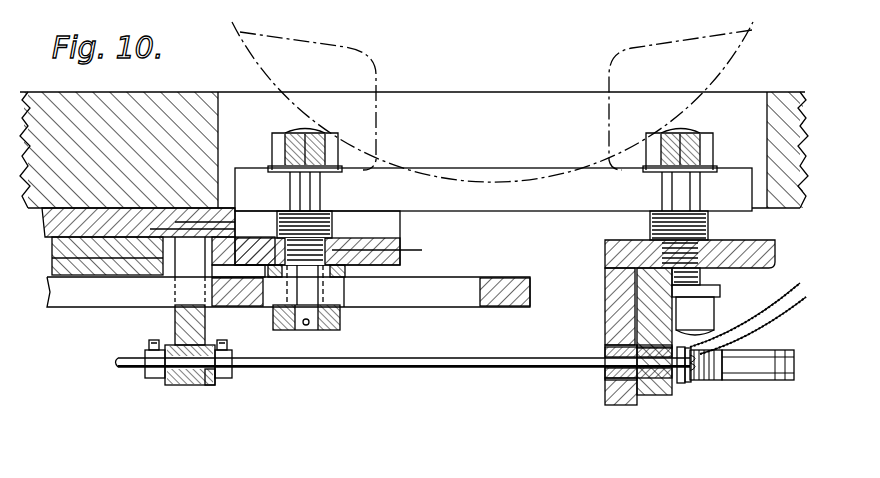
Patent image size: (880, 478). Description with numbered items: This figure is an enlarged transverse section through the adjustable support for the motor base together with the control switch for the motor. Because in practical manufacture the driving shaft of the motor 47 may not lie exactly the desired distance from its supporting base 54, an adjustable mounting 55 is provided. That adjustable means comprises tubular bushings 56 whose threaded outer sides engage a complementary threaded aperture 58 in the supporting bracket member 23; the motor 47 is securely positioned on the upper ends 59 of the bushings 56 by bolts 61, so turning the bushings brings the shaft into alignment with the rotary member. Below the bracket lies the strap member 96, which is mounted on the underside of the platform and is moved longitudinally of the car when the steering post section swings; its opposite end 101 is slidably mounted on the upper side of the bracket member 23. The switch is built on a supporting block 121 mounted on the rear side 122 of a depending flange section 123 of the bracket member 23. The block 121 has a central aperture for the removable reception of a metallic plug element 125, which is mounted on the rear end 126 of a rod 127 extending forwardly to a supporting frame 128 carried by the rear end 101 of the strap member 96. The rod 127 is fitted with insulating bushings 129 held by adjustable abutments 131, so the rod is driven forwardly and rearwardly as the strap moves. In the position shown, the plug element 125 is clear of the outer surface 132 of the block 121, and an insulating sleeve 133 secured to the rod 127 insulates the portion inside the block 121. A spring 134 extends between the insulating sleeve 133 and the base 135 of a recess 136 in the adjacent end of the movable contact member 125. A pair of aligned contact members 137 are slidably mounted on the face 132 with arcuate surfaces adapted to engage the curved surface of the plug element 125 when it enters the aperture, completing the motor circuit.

The motor 47 is at (377, 77).
The supporting base 54 is at (366, 211).
The bolts 61 is at (276, 144).
The upper ends 59 is at (330, 212).
The adjustable mounting 55 is at (333, 225).
The tubular bushings 56 is at (400, 233).
The threaded aperture 58 is at (332, 257).
The opposite end 101 is at (236, 223).
The strap member 96 is at (50, 240).
The supporting bracket member 23 is at (362, 268).
The outer surface 132 is at (712, 318).
The metallic plug element 125 is at (773, 351).
The rear end 126 is at (736, 380).
The base 135 is at (718, 381).
The spring 134 is at (712, 383).
The recess 136 is at (696, 382).
The contact members 137 is at (681, 384).
The rear side 122 is at (642, 405).
The supporting block 121 is at (656, 396).
The insulating sleeve 133 is at (607, 375).
The depending flange section 123 is at (609, 398).
The rod 127 is at (558, 352).
The supporting frame 128 is at (186, 386).
The insulating bushings 129 is at (210, 386).
The adjustable abutments 131 is at (232, 353).